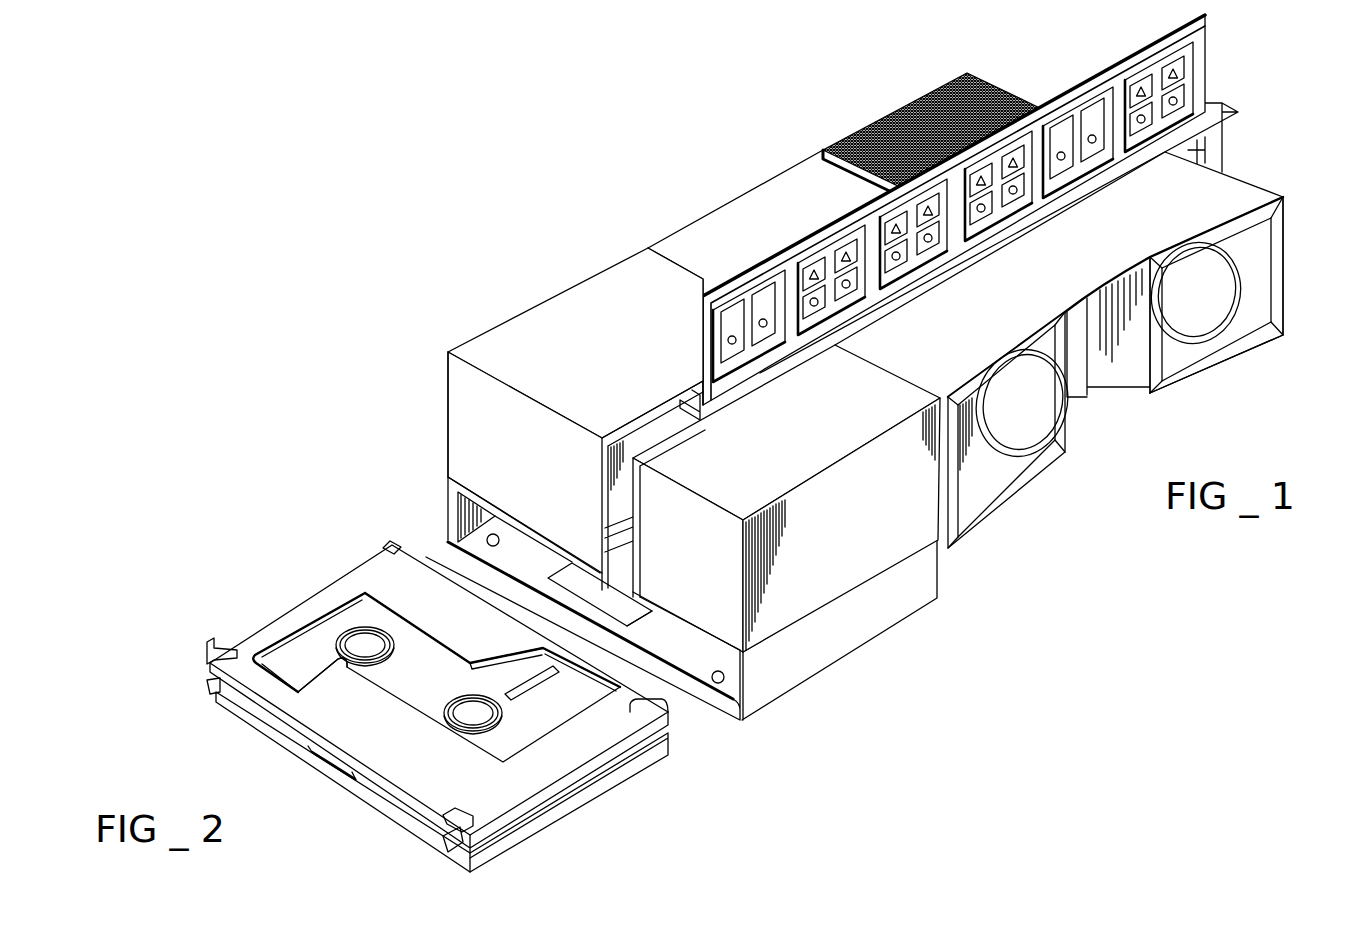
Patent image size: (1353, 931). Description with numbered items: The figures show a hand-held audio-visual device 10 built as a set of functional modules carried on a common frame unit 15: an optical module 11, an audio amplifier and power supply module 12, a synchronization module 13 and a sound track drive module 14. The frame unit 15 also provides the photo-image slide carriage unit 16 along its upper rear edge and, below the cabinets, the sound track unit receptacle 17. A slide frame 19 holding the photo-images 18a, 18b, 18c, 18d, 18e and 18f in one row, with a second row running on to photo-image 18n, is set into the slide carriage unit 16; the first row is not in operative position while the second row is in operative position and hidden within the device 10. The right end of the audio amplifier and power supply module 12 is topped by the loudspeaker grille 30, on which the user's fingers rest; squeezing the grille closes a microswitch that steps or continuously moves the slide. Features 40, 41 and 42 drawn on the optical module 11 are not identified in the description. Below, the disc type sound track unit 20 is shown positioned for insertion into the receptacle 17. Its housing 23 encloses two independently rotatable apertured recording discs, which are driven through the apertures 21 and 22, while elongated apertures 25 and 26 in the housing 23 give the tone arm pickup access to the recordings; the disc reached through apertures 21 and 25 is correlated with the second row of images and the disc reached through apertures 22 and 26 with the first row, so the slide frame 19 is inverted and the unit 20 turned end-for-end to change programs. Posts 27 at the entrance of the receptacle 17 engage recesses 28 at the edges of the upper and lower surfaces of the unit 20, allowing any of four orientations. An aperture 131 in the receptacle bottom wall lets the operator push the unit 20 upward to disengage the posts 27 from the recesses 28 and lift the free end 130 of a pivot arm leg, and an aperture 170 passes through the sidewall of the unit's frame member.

In FIG. 1, the device 10 is at (690, 197).
In FIG. 1, the optical module 11 is at (1059, 350).
In FIG. 1, the audio amplifier and power supply module 12 is at (792, 197).
In FIG. 1, the synchronization module 13 is at (755, 447).
In FIG. 1, the sound track drive module 14 is at (587, 388).
In FIG. 1, the frame unit 15 is at (822, 653).
In FIG. 1, the photo-image slide carriage unit 16 is at (1218, 145).
In FIG. 1, the sound track unit receptacle 17 is at (583, 597).
In FIG. 1, the photo-image 18a is at (750, 306).
In FIG. 1, the photo-image 18b is at (830, 258).
In FIG. 1, the photo-image 18c is at (908, 225).
In FIG. 1, the photo-image 18d is at (993, 212).
In FIG. 1, the photo-image 18e is at (1075, 110).
In FIG. 1, the photo-image 18f is at (1160, 68).
In FIG. 1, the photo-image 18n is at (1200, 157).
In FIG. 1, the frame 19 is at (1195, 33).
In FIG. 2, the sound track unit 20 is at (429, 687).
In FIG. 2, the aperture 21 is at (362, 643).
In FIG. 2, the aperture 22 is at (475, 722).
In FIG. 2, the housing 23 is at (312, 597).
In FIG. 2, the elongated aperture 25 is at (300, 692).
In FIG. 2, the elongated aperture 26 is at (533, 688).
In FIG. 1, the posts 27 is at (497, 544).
In FIG. 2, the recesses 28 is at (388, 543).
In FIG. 1, the loudspeaker grille 30 is at (918, 112).
In FIG. 1, the recess 40 is at (1083, 415).
In FIG. 1, the loudspeaker 41 is at (1001, 419).
In FIG. 1, the loudspeaker 42 is at (1181, 308).
In FIG. 1, the free end of pivot arm leg 130 is at (605, 590).
In FIG. 1, the aperture 131 is at (632, 613).
In FIG. 2, the aperture 170 is at (337, 757).